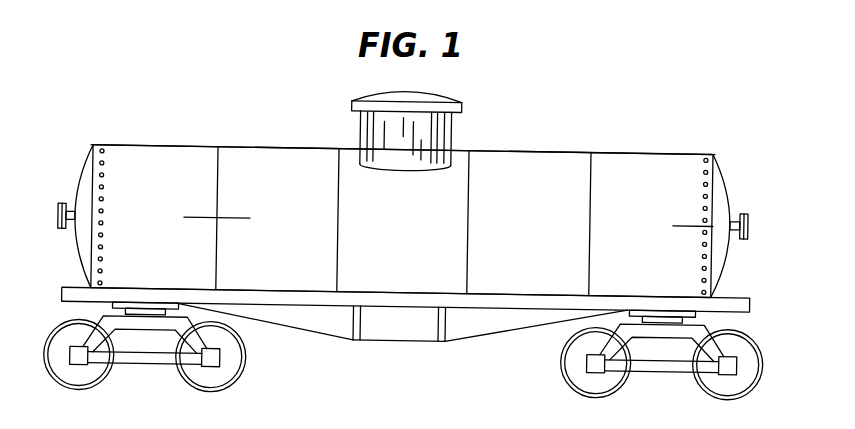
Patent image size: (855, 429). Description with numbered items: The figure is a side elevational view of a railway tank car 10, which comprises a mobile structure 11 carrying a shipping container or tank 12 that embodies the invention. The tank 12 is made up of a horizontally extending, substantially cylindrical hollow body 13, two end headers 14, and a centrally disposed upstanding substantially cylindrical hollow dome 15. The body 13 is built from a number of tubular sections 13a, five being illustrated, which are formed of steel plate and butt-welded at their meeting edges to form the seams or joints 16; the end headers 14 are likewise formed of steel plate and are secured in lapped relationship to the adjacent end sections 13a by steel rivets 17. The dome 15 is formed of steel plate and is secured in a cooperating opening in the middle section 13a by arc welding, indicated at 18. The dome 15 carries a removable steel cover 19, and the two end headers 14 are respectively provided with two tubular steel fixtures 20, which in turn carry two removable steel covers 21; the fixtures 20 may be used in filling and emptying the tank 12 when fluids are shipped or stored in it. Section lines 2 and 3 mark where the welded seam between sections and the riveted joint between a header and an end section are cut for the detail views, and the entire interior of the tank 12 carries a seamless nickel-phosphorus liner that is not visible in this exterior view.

The railway tank car 10 is at (271, 129).
The mobile structure 11 is at (351, 300).
The tank 12 is at (527, 150).
The body 13 is at (531, 238).
The tubular sections 13a is at (383, 220).
The end headers 14 is at (80, 162).
The dome 15 is at (406, 138).
The seams or joints 16 is at (339, 237).
The rivets 17 is at (105, 158).
The arc welding 18 is at (410, 171).
The cover 19 is at (430, 95).
The fixtures 20 is at (70, 232).
The covers 21 is at (57, 218).
The section line 2- 2 is at (195, 221).
The section line 3- 3 is at (688, 222).